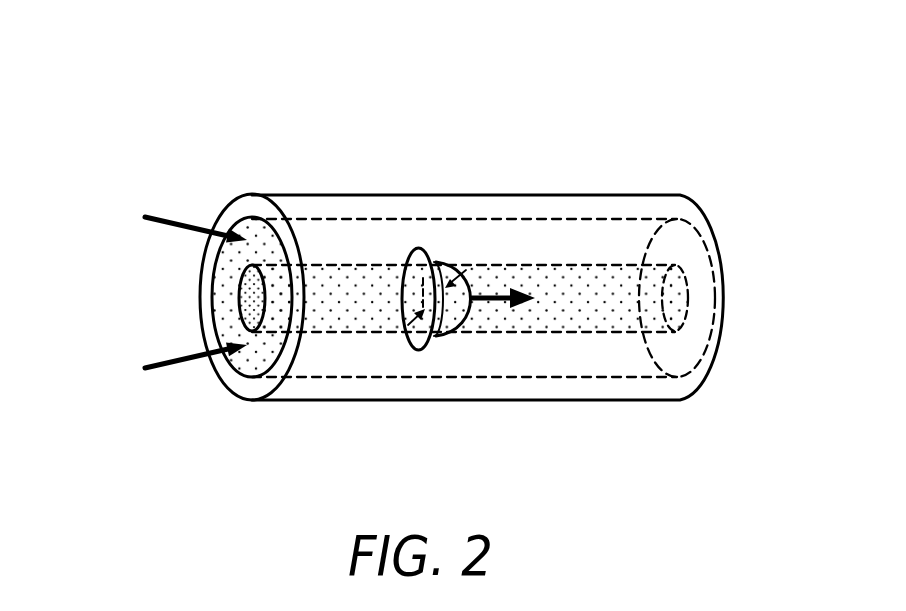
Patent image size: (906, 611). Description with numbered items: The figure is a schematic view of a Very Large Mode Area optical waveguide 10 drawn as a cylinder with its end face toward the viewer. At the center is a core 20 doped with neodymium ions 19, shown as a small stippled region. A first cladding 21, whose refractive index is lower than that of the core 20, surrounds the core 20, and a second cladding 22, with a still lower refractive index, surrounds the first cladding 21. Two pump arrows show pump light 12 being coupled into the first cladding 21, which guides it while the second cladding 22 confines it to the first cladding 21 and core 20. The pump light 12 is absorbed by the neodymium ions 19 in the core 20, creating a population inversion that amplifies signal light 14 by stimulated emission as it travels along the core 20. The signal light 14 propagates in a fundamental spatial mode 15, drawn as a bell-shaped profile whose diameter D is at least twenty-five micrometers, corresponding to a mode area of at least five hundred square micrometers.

The Very Large Mode Area optical waveguide 10 is at (673, 70).
The pump light 12 is at (171, 221).
The signal light 14 is at (522, 290).
The fundamental spatial mode 15 is at (428, 262).
The neodymium ions 19 is at (578, 320).
The core 20 is at (240, 292).
The first cladding 21 is at (226, 322).
The second cladding 22 is at (243, 388).